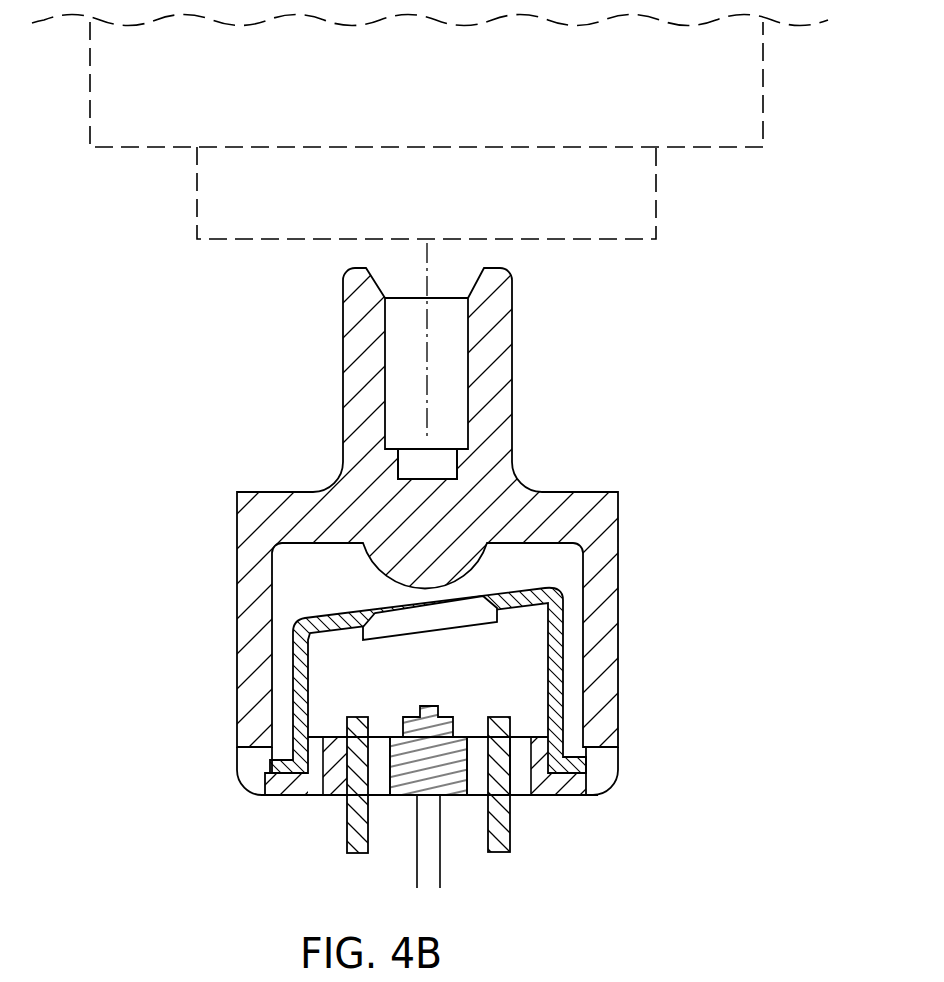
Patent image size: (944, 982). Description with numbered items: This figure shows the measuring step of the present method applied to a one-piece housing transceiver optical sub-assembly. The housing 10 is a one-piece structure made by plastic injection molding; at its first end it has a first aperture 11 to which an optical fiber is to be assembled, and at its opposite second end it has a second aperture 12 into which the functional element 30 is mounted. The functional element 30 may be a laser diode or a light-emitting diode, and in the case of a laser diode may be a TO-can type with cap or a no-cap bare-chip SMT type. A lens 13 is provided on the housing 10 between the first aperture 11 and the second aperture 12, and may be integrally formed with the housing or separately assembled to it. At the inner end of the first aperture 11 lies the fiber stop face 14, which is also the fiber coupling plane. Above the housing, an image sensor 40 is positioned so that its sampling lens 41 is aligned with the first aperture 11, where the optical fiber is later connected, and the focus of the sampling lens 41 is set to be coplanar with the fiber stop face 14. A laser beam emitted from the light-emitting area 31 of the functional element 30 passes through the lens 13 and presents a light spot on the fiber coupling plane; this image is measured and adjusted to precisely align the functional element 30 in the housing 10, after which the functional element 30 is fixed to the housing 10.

The housing 10 is at (625, 412).
The first aperture 11 is at (450, 367).
The second aperture 12 is at (573, 688).
The lens 13 is at (437, 507).
The fiber stop face 14 is at (403, 440).
The functional element 30 is at (522, 852).
The light-emitting area 31 is at (425, 705).
The image sensor 40 is at (768, 82).
The sampling lens 41 is at (592, 192).